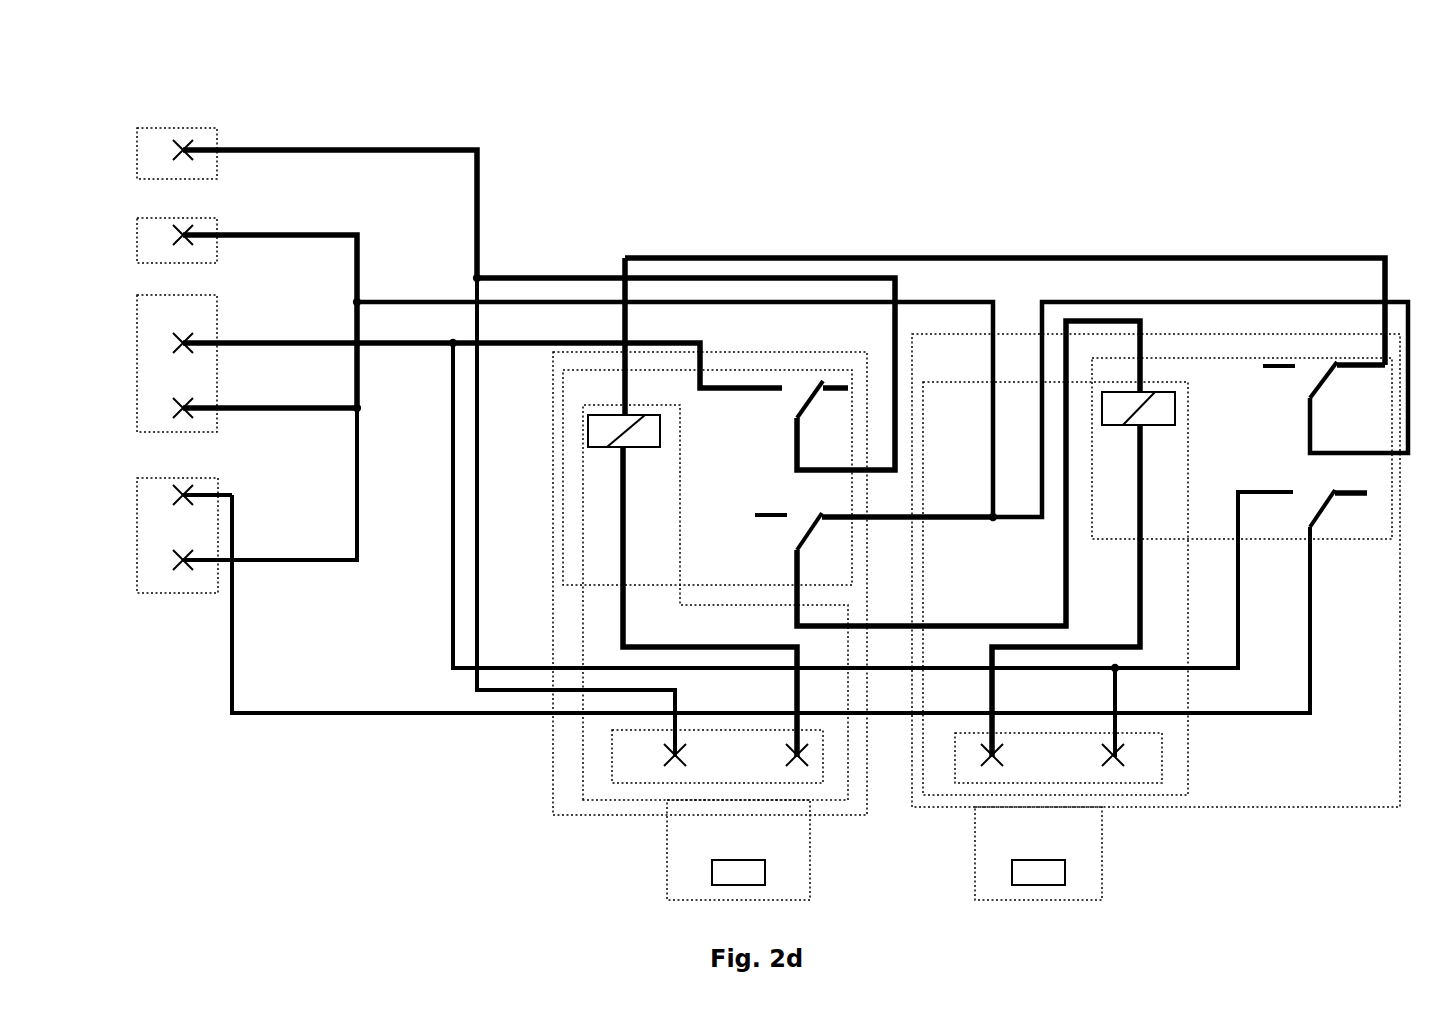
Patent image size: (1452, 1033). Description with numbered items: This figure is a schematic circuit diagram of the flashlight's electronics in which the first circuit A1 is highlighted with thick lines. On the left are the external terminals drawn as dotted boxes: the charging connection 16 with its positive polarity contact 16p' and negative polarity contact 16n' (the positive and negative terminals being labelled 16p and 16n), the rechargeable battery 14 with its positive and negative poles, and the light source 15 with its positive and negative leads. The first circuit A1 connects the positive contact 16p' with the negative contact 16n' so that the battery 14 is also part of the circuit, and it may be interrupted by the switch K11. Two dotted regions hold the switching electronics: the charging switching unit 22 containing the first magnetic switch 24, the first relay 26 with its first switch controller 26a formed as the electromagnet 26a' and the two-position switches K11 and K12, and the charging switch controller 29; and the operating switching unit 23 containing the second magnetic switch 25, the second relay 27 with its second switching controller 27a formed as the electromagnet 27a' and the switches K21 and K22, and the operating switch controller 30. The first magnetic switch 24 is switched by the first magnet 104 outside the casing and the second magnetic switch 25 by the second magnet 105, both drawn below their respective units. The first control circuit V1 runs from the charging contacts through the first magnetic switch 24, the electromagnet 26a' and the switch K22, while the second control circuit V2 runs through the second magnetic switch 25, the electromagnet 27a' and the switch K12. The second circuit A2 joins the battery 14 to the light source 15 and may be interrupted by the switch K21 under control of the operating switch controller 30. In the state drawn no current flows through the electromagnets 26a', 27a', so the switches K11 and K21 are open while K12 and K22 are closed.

The rechargeable battery 14 is at (137, 362).
The light source 15 is at (168, 593).
The charging connection 16 is at (282, 258).
The charger positive terminal 16p is at (282, 195).
The positive polarity contact 16p' is at (282, 195).
The charger negative terminal 16n is at (220, 301).
The negative polarity contact 16n' is at (220, 305).
The charging switching unit 22 is at (553, 789).
The operating switching unit 23 is at (1337, 807).
The first magnetic switch 24 is at (690, 785).
The second magnetic switch 25 is at (1103, 785).
The first relay 26 is at (563, 522).
The first switch controller 26a is at (607, 304).
The electromagnet 26a' is at (654, 491).
The second relay 27 is at (1392, 490).
The second switching controller 27a is at (1091, 303).
The electromagnet 27a' is at (1040, 486).
The charging switch controller 29 is at (585, 647).
The operating switch controller 30 is at (1188, 763).
The first magnet 104 is at (753, 885).
The second magnet 105 is at (1033, 885).
The first circuit A1 is at (727, 276).
The second circuit A2 is at (1317, 572).
The first control circuit V1 is at (477, 498).
The second control circuit V2 is at (453, 617).
The first switch K11 is at (822, 404).
The auxiliary switch K12 is at (947, 473).
The second switch K21 is at (1338, 508).
The auxiliary switch K22 is at (1324, 384).